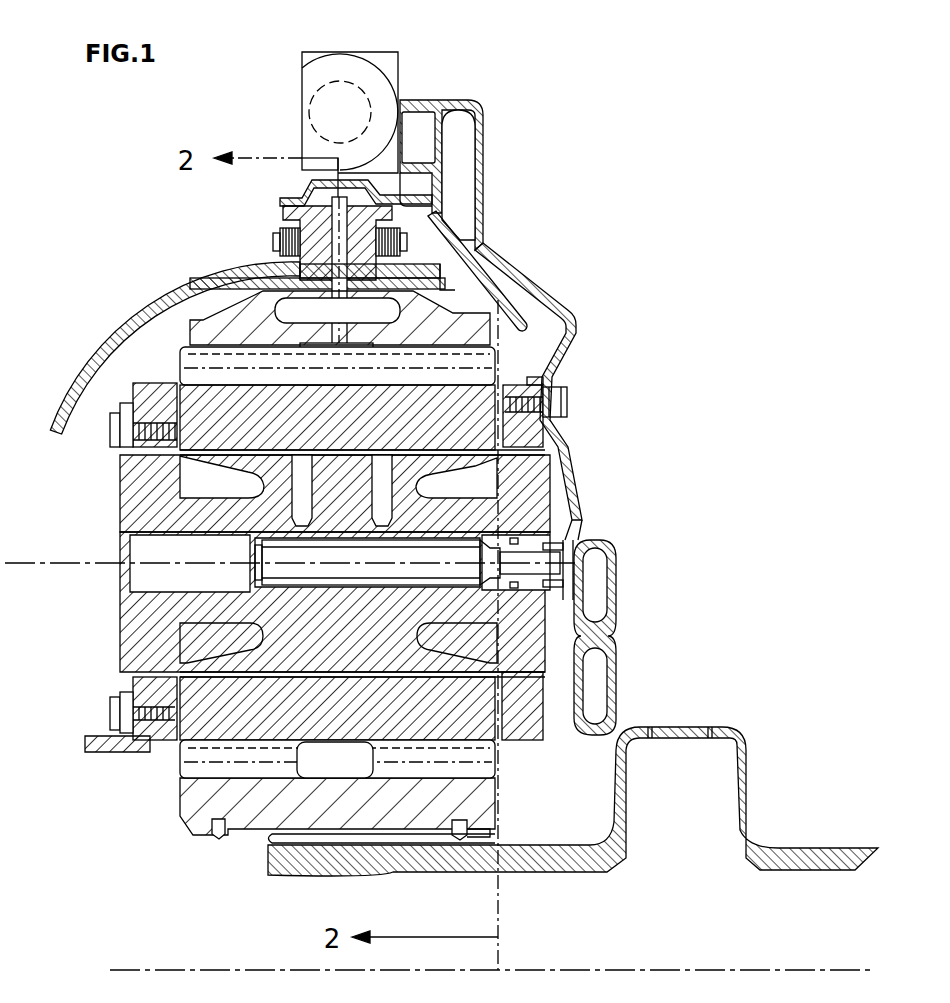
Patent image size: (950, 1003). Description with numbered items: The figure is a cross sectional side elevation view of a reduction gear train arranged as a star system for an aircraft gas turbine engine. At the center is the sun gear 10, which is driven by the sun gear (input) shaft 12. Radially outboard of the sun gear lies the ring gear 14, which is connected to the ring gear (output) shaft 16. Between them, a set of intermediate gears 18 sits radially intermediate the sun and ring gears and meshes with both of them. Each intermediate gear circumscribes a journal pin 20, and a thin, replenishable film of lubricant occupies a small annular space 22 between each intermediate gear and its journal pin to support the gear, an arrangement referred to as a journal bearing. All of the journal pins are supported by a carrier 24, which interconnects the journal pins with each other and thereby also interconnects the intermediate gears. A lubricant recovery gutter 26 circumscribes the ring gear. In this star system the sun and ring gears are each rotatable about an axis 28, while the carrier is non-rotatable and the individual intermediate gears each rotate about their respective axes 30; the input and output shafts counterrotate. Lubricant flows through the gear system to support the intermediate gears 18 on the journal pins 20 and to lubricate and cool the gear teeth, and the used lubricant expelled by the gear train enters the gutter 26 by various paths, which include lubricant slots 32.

The sun gear 10 is at (200, 810).
The sun gear (input) shaft 12 is at (312, 853).
The ring gear 14 is at (462, 337).
The ring gear (output) shaft 16 is at (130, 325).
The intermediate gears 18 is at (203, 747).
The journal pin 20 is at (138, 608).
The annular space 22 is at (187, 673).
The carrier 24 is at (543, 436).
The lubricant recovery gutter 26 is at (334, 218).
The axis 28 is at (137, 968).
The axes 30 is at (65, 558).
The lubricant slots 32 is at (308, 187).